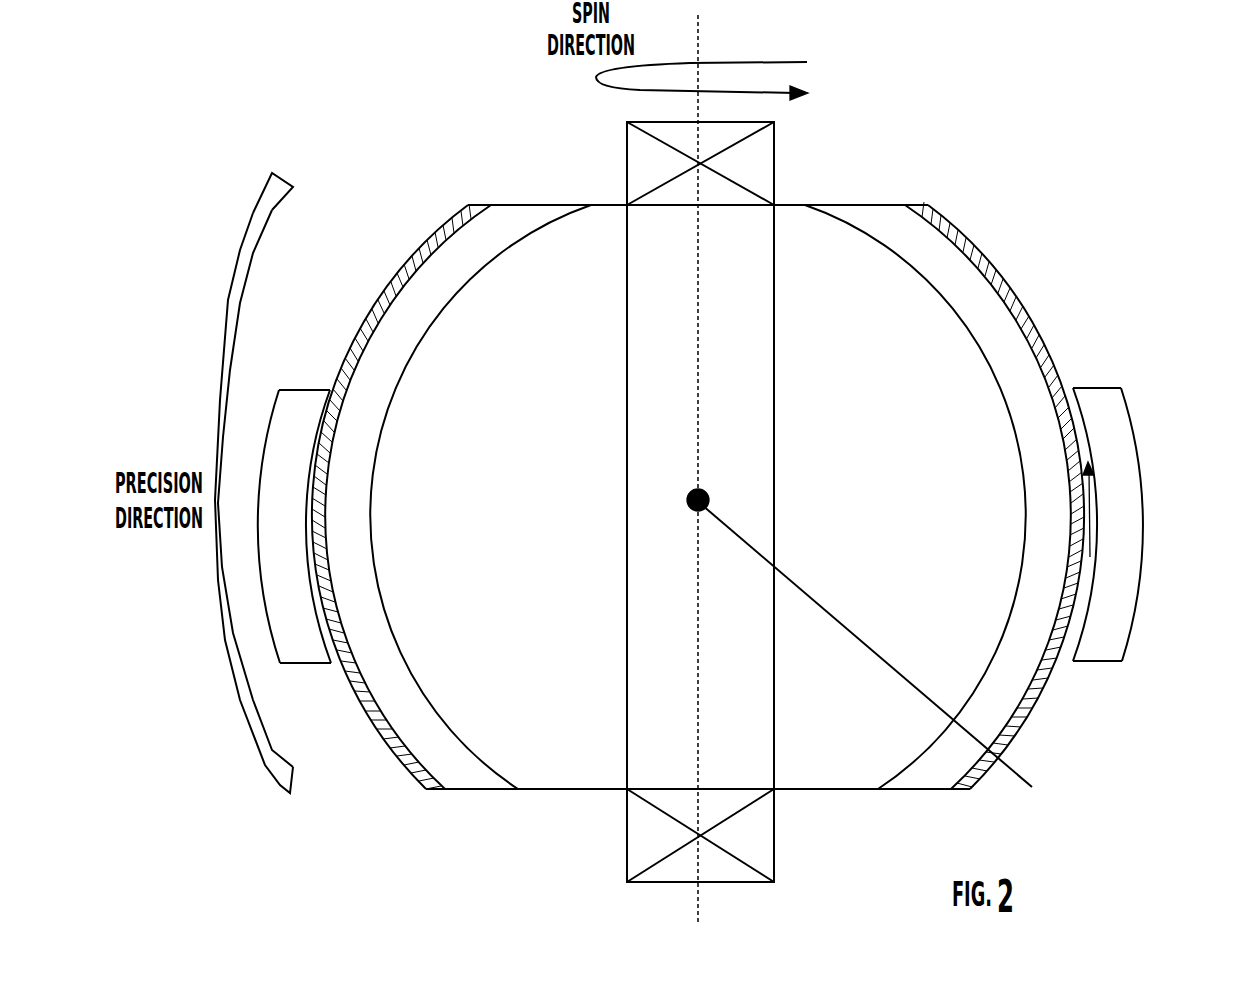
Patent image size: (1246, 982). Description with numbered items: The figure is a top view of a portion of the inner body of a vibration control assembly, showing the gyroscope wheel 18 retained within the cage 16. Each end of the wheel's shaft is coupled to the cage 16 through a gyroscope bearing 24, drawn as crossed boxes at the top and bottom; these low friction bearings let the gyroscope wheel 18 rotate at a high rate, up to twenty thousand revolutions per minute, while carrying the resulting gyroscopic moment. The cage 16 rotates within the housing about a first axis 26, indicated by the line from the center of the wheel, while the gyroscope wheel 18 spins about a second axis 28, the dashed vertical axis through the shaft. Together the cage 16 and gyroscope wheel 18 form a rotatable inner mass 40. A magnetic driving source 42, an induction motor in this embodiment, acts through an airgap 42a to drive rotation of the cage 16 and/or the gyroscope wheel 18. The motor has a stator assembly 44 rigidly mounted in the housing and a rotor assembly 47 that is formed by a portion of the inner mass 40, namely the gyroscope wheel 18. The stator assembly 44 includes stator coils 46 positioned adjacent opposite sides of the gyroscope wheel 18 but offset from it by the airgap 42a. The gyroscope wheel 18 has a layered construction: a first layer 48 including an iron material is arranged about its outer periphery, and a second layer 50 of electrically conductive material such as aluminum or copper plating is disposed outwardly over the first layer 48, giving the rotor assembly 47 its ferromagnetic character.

The cage 16 is at (754, 413).
The gyroscope wheel 18 is at (1000, 690).
The gyroscope bearing 24 is at (683, 162).
The first axis 26 is at (870, 644).
The second axis 28 is at (697, 762).
The inner mass 40 is at (805, 179).
The magnetic driving source 42 is at (1174, 559).
The airgap 42a is at (1085, 588).
The stator assembly 44 is at (1152, 499).
The stator coil 46 is at (298, 413).
The rotor assembly 47 is at (938, 168).
The first layer 48 is at (1010, 352).
The second layer 50 is at (1052, 368).